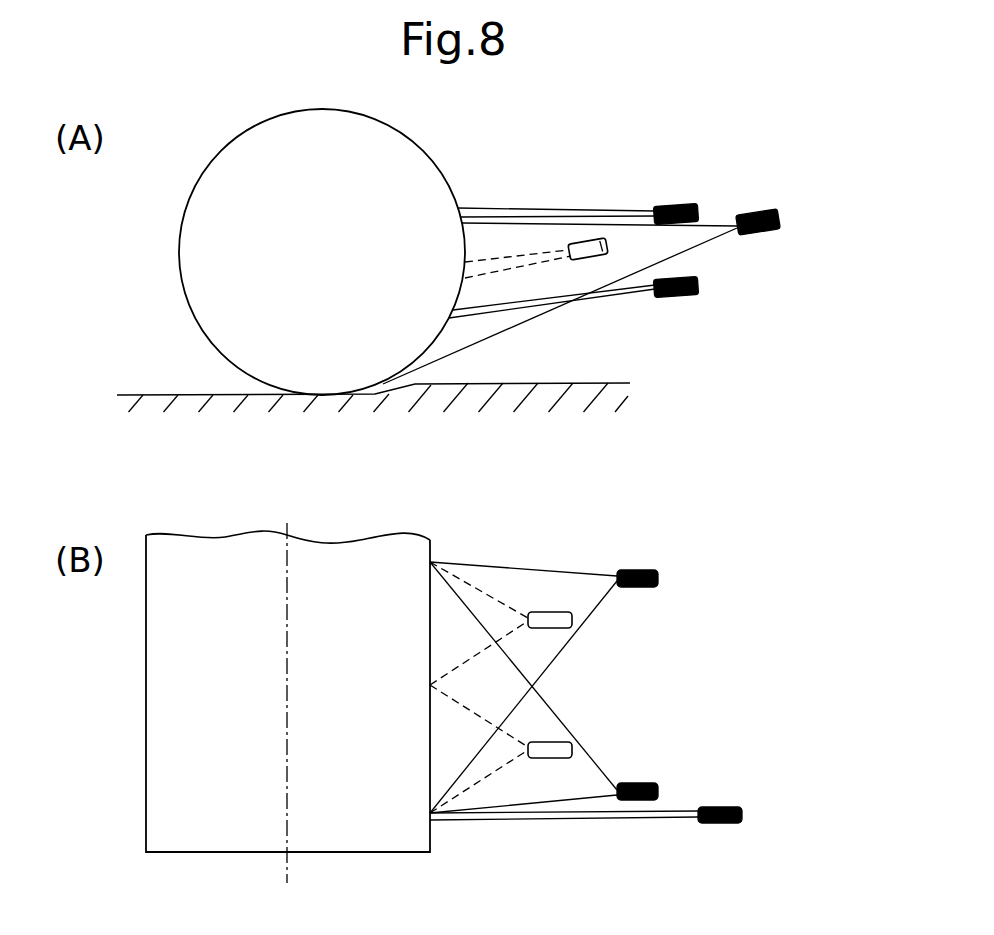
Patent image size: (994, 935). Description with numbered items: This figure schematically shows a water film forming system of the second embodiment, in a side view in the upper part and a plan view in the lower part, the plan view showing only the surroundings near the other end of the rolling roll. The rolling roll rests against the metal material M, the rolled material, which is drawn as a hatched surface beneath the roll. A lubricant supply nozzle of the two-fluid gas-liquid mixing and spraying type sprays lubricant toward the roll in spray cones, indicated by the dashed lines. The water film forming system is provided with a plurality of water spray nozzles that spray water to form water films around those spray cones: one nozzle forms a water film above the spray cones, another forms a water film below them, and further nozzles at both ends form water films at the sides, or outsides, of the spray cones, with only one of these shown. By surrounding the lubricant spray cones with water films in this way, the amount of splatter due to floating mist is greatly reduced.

The metal material M is at (517, 400).